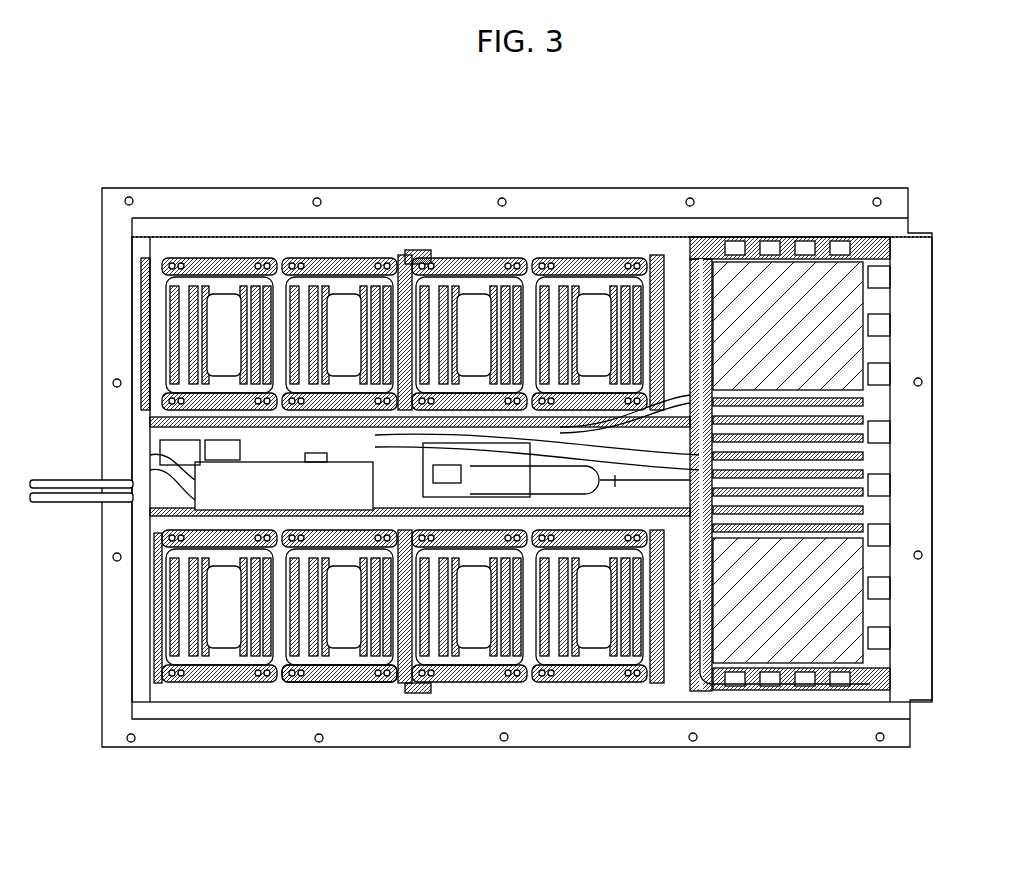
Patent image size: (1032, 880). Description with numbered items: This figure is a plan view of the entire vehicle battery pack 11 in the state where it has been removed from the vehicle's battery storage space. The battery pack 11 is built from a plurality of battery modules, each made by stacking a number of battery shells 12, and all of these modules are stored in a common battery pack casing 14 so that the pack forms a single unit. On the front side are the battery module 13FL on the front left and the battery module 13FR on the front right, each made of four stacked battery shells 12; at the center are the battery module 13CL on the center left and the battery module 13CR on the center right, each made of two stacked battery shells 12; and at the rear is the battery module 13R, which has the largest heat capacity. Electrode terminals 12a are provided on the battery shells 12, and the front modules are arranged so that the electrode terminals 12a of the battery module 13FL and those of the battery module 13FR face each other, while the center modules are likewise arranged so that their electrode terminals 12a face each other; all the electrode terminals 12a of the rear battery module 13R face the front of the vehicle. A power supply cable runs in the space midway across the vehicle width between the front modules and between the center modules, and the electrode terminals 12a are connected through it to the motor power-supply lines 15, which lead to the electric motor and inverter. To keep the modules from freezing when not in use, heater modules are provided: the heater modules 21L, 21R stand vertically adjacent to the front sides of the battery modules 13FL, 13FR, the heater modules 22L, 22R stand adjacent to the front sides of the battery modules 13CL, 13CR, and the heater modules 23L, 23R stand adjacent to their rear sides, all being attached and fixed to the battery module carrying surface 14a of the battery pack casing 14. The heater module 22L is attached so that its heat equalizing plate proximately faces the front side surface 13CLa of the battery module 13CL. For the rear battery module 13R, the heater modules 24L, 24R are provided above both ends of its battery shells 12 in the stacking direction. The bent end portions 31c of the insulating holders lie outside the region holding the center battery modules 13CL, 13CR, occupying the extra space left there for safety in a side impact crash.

The vehicle battery pack 11 is at (878, 186).
The battery shell 12 is at (602, 642).
The electrode terminal 12a is at (600, 550).
The battery module on the front right side 13FR is at (223, 256).
The battery module on the center right side 13CR is at (476, 254).
The battery module on the front left side 13FL is at (223, 684).
The battery module on the center left side 13CL is at (480, 684).
The front side surface of the battery module 13CLa is at (387, 686).
The battery module at the rear 13R is at (748, 240).
The battery pack casing 14 is at (818, 187).
The battery module carrying surface 14a is at (457, 245).
The motor power-supply line 15 is at (70, 490).
The heater module 21R is at (150, 258).
The heater module 21L is at (158, 685).
The heater module 22R is at (403, 251).
The heater module 22L is at (405, 687).
The heater module 23R is at (656, 252).
The heater module 23L is at (658, 686).
The heater module 24R is at (860, 303).
The heater module 24L is at (860, 605).
The bent end portion of the insulating holder 31c is at (430, 248).